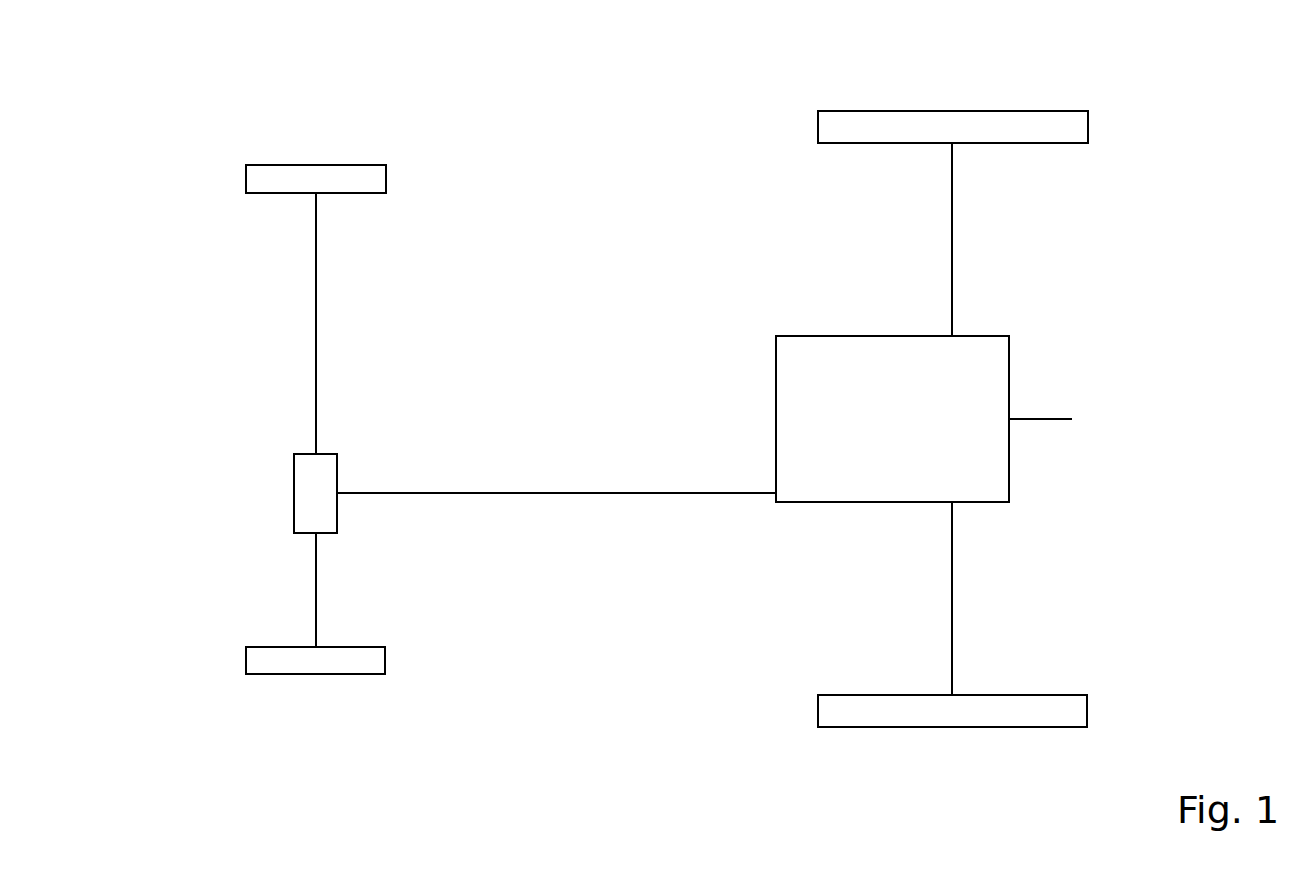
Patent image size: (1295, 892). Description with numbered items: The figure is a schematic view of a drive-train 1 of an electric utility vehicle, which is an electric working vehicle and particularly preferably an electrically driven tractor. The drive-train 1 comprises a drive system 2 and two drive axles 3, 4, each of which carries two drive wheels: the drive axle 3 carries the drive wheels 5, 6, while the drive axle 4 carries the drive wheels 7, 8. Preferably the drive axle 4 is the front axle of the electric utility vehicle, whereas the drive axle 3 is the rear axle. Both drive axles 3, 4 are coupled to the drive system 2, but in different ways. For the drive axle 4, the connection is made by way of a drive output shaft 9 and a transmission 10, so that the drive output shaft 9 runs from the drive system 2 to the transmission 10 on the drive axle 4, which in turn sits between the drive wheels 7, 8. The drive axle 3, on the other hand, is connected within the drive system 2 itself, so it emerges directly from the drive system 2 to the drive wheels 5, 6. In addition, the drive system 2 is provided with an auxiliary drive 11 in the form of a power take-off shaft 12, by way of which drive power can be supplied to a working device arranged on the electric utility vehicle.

The drive-train 1 is at (191, 146).
The drive system 2 is at (818, 360).
The drive axle 3 is at (953, 251).
The drive axle 4 is at (316, 325).
The drive wheel 5 is at (1025, 126).
The drive wheel 6 is at (1045, 709).
The drive wheel 7 is at (318, 177).
The drive wheel 8 is at (294, 675).
The drive output shaft 9 is at (566, 495).
The transmission 10 is at (300, 493).
The auxiliary drive 11 is at (1077, 406).
The power take-off shaft 12 is at (1043, 423).